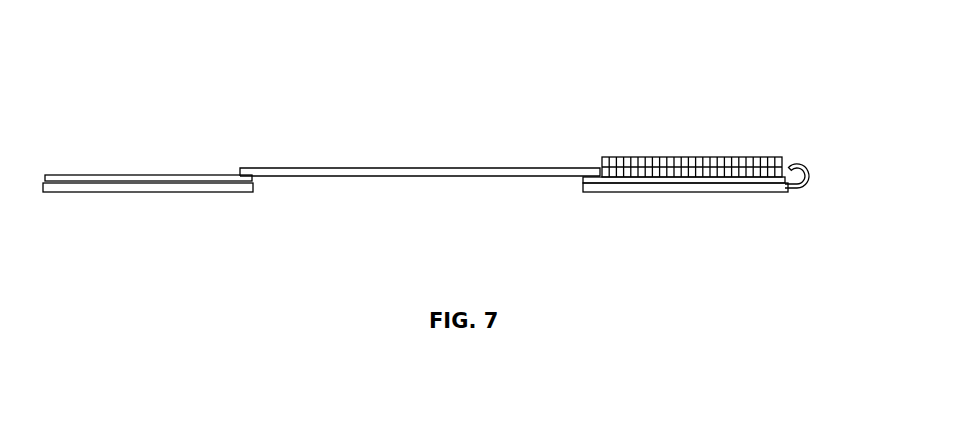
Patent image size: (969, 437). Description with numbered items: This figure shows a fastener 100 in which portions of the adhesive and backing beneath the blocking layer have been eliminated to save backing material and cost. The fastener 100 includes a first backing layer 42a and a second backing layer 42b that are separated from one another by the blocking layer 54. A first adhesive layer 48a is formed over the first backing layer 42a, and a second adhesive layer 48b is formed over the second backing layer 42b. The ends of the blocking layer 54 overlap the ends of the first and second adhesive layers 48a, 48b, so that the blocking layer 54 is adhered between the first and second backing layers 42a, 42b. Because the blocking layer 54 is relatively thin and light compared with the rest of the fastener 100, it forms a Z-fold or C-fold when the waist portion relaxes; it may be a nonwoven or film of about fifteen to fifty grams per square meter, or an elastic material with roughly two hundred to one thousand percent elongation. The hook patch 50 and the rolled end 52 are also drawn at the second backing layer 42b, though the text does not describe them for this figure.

The fastener 100 is at (262, 132).
The blocking layer 54 is at (431, 167).
The first adhesive layer 48a is at (108, 179).
The first backing layer 42a is at (147, 193).
The hook fastener patch 50 is at (680, 158).
The second adhesive layer 48b is at (621, 183).
The second backing layer 42b is at (682, 193).
The rolled hook end 52 is at (810, 168).